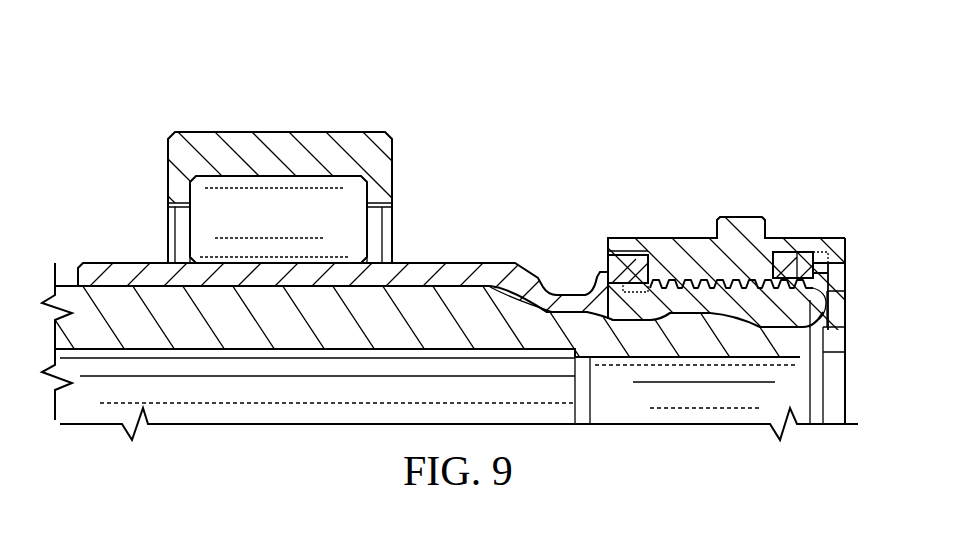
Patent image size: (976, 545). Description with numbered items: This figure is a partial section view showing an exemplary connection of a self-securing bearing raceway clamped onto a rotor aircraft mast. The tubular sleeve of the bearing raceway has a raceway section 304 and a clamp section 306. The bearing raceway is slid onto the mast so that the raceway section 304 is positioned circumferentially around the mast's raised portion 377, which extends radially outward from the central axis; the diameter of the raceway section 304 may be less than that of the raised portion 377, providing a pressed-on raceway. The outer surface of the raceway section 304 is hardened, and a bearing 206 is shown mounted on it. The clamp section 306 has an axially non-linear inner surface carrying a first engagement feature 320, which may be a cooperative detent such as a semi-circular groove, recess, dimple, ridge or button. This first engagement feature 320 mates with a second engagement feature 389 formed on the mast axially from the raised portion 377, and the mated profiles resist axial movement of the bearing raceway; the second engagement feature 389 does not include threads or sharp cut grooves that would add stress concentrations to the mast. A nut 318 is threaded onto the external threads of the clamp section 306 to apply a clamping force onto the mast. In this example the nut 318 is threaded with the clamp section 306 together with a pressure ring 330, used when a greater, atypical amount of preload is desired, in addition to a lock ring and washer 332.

The raceway section 304 is at (538, 60).
The clamp section 306 is at (846, 60).
The bearing 206 is at (278, 143).
The raised portion 377 is at (453, 303).
The first engagement feature 320 is at (612, 312).
The pressure ring 330 is at (623, 265).
The nut 318 is at (745, 223).
The lock ring and washer 332 is at (802, 250).
The second engagement feature 389 is at (635, 318).